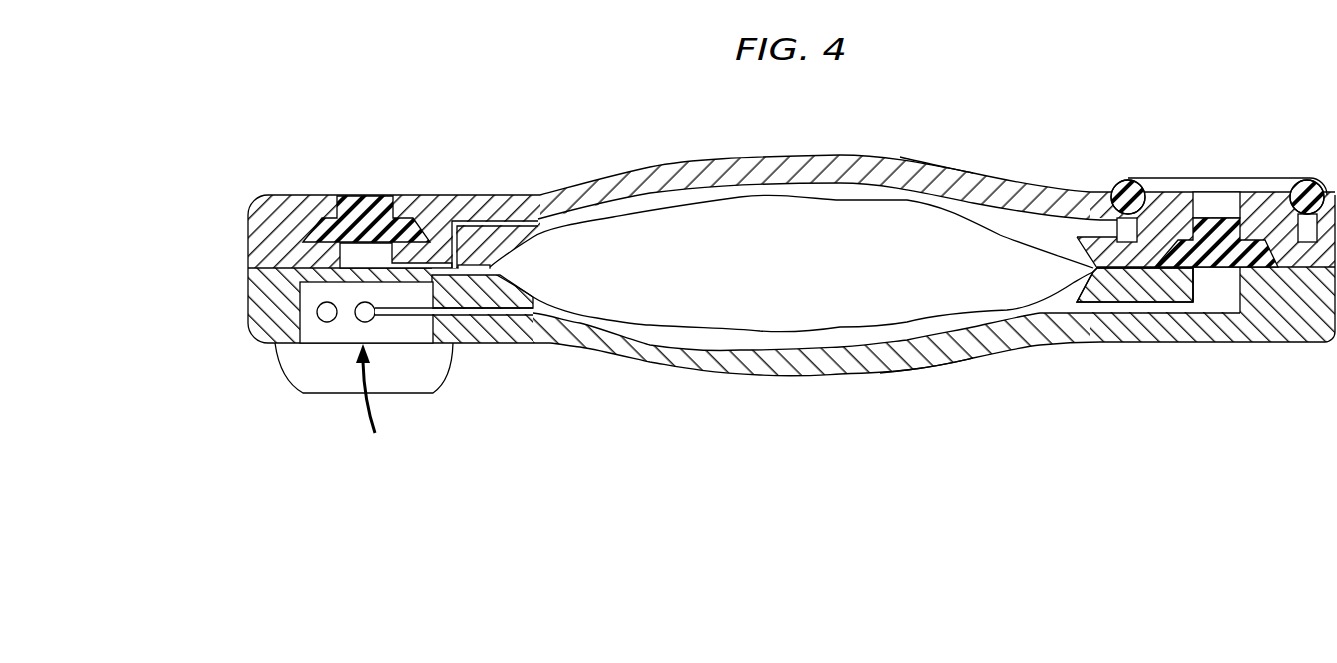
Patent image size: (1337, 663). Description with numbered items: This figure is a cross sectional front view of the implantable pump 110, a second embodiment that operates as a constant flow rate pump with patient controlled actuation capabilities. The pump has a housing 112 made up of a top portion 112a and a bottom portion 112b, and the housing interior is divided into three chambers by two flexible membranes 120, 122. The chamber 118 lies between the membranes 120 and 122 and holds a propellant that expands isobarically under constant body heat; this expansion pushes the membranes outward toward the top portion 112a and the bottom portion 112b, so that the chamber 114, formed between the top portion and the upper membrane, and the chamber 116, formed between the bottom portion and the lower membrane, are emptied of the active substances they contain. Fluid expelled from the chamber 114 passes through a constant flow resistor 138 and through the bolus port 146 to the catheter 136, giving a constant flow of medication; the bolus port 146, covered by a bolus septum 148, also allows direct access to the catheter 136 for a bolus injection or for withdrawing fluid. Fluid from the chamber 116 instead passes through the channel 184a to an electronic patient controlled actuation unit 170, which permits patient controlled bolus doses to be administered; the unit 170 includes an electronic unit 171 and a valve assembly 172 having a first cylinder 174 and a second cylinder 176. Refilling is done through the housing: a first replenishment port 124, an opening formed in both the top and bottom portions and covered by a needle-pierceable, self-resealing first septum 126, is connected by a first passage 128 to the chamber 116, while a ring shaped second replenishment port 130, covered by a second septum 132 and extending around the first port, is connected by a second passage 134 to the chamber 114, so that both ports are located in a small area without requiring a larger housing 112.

The implantable pump 110 is at (1080, 52).
The housing 112 is at (230, 265).
The top portion of housing 112a is at (283, 200).
The bottom portion of housing 112b is at (262, 310).
The chamber 114 is at (610, 210).
The chamber 116 is at (637, 335).
The chamber 118 is at (760, 293).
The membrane 120 is at (957, 215).
The membrane 122 is at (913, 345).
The first replenishment port 124 is at (1220, 290).
The first septum 126 is at (1218, 217).
The first passage 128 is at (1145, 305).
The second replenishment port 130 is at (1150, 222).
The second septum 132 is at (1118, 182).
The second passage 134 is at (1090, 227).
The catheter 136 is at (328, 318).
The constant flow resistor 138 is at (482, 225).
The bolus port 146 is at (353, 257).
The bolus septum 148 is at (362, 197).
The electronic patient controlled actuation unit 170 is at (374, 403).
The electronic unit 171 is at (300, 353).
The valve assembly 172 is at (347, 333).
The first cylinder 174 is at (368, 317).
The second cylinder 176 is at (358, 282).
The channel 184a is at (477, 340).